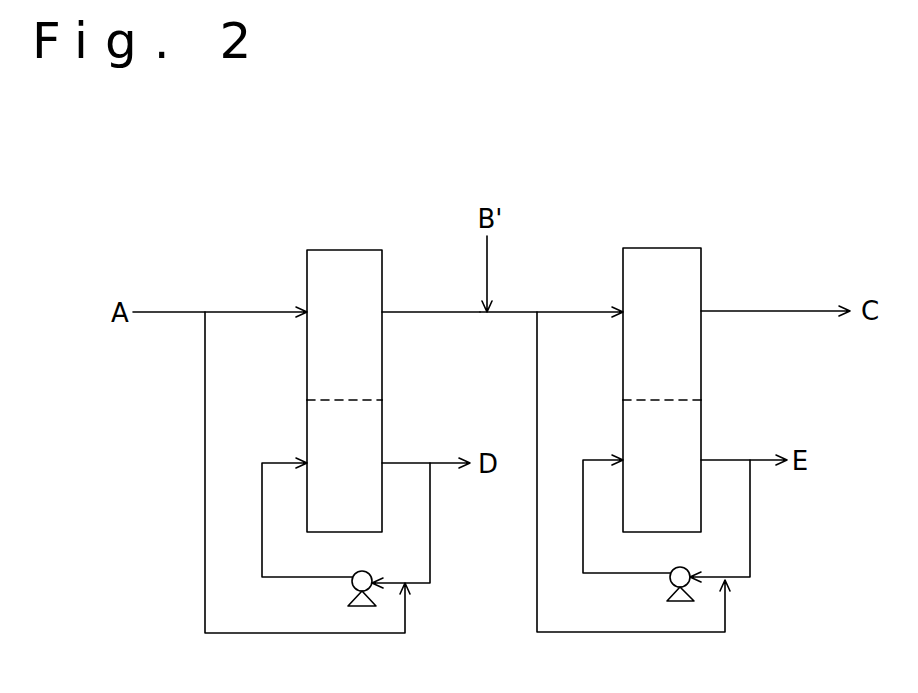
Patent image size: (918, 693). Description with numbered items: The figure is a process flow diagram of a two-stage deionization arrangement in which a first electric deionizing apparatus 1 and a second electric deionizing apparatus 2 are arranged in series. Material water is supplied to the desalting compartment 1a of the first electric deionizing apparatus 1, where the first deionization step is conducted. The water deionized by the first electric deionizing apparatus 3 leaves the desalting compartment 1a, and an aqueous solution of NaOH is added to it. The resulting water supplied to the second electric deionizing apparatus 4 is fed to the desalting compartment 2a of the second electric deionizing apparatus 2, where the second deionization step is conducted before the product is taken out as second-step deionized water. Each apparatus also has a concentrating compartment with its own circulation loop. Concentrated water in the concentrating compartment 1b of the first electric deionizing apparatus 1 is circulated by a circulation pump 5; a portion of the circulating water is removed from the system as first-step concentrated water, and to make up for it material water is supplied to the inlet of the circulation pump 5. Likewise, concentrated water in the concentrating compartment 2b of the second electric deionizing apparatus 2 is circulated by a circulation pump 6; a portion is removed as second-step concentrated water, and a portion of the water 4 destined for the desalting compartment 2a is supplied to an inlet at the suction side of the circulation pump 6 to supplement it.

The first electric deionizing apparatus 1 is at (390, 339).
The desalting compartment of the first electric deionizing apparatus 1a is at (344, 325).
The concentrating compartment of the first electric deionizing apparatus 1b is at (344, 466).
The second electric deionizing apparatus 2 is at (701, 338).
The desalting compartment of the second electric deionizing apparatus 2a is at (662, 324).
The concentrating compartment of the second electric deionizing apparatus 2b is at (662, 466).
The water deionized by the first electric deionizing apparatus 3 is at (425, 312).
The water supplied to the second electric deionizing apparatus 4 is at (518, 312).
The circulation pump 5 is at (352, 590).
The circulation pump 6 is at (672, 586).